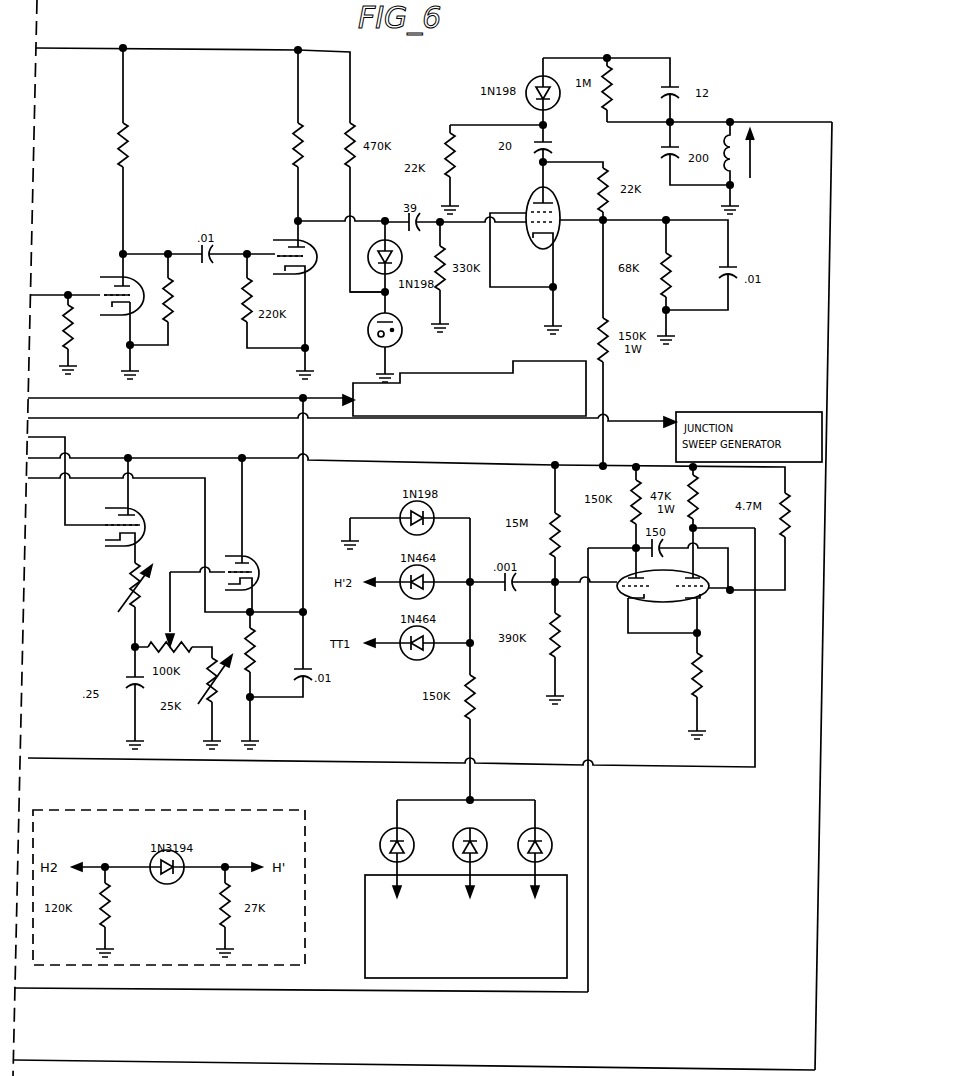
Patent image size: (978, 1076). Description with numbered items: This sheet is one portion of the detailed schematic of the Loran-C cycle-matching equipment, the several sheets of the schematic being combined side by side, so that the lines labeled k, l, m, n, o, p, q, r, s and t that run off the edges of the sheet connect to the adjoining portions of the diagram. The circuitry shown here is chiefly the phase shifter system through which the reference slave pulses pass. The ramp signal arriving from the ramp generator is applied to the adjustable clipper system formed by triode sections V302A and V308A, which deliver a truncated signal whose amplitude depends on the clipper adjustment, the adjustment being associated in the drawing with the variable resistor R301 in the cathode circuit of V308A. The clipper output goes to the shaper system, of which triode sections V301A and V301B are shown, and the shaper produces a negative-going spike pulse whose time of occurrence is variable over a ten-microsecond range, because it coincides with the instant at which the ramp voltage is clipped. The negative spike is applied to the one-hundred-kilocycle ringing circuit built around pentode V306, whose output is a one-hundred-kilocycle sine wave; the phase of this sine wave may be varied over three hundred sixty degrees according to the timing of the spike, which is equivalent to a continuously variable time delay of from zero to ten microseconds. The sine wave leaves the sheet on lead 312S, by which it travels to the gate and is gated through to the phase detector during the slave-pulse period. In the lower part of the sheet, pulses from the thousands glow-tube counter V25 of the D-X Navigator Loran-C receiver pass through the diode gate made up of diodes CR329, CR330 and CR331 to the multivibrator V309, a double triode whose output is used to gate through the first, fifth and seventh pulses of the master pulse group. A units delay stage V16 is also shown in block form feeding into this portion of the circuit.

The plate supply line k is at (210, 158).
The input line l is at (65, 286).
The line m is at (191, 391).
The line n is at (352, 412).
The line o is at (66, 471).
The line p is at (406, 513).
The line q is at (165, 535).
The line r is at (391, 647).
The line s is at (301, 979).
The line t is at (414, 1054).
The lead 312S is at (808, 856).
The shaper V301A is at (124, 212).
The shaper V301B is at (292, 197).
The 100-kc. ringing circuit V306 is at (546, 228).
The adjustable clipper system V308A is at (135, 510).
The adjustable clipper system V302A is at (233, 603).
The multivibrator V309 is at (669, 633).
The potentiometer R301 is at (111, 655).
The units delay V16 is at (469, 388).
The thousands glow-tube counter V25 is at (466, 926).
The gate CR329 is at (373, 837).
The gate CR330 is at (450, 837).
The gate CR331 is at (517, 837).